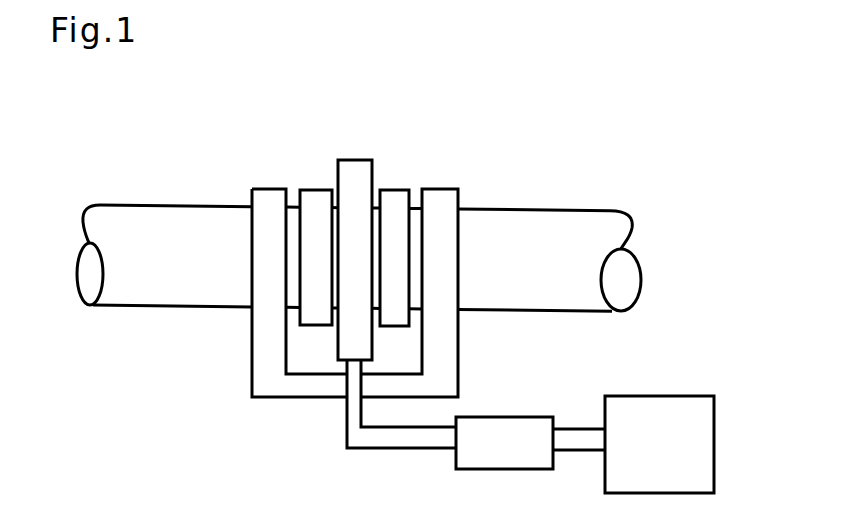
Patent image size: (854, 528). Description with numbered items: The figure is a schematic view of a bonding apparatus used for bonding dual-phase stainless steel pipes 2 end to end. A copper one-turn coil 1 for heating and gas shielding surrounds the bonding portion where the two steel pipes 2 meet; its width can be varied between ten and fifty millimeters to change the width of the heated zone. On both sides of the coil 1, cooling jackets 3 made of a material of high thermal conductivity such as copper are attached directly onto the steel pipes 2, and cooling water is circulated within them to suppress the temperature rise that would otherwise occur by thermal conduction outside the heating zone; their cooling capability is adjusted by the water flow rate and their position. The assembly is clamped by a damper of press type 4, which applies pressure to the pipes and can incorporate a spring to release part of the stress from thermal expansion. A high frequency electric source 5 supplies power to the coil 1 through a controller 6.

The copper one-turn coil 1 is at (356, 165).
The dual-phase stainless steel pipes 2 is at (143, 217).
The cooling jackets 3 is at (312, 197).
The damper of press type 4 is at (260, 352).
The high frequency electric source 5 is at (690, 408).
The controller 6 is at (521, 432).